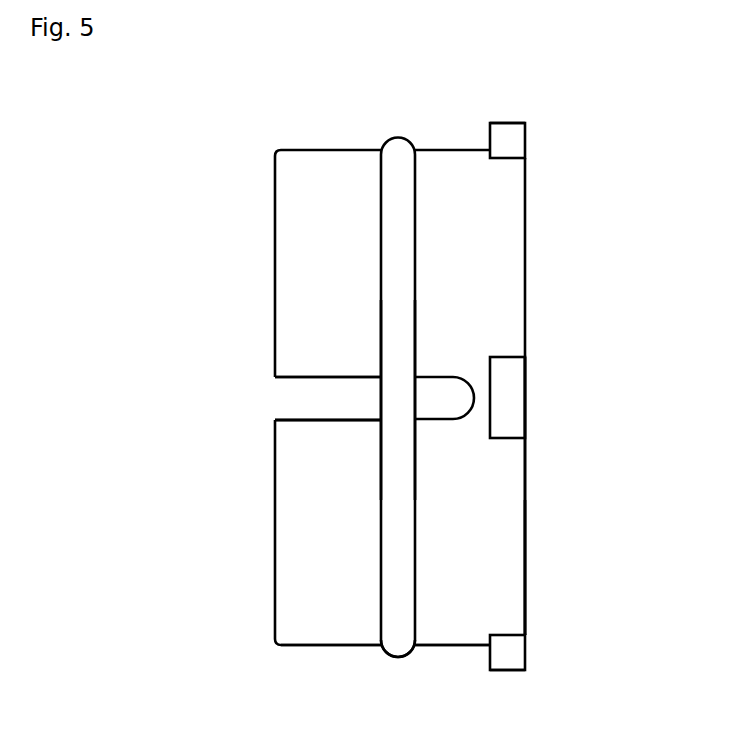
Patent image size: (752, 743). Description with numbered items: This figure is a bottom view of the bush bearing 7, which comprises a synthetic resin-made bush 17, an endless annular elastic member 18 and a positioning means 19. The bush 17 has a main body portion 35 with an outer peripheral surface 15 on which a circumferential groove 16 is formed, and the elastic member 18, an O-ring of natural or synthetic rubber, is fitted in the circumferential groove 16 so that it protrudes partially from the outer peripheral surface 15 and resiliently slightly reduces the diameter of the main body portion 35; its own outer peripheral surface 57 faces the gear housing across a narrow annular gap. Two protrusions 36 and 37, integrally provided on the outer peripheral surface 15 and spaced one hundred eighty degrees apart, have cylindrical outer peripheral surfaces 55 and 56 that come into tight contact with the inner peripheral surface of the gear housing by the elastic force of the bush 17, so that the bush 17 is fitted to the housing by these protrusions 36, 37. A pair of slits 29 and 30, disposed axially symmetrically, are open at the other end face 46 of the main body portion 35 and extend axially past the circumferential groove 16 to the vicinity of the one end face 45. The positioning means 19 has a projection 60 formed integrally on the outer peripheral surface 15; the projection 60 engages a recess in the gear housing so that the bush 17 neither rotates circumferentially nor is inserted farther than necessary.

The bush bearing 7 is at (550, 587).
The outer peripheral surface 15 is at (500, 237).
The circumferential groove 16 is at (407, 568).
The bush 17 is at (272, 549).
The endless annular elastic member 18 is at (393, 190).
The positioning means 19 is at (535, 400).
The slit 29 is at (288, 399).
The slit 30 is at (284, 433).
The main body portion 35 is at (300, 606).
The protrusion 36 is at (515, 143).
The protrusion 37 is at (515, 652).
The one end face 45 is at (527, 484).
The other end face 46 is at (275, 268).
The outer peripheral surface 55 is at (510, 123).
The outer peripheral surface 56 is at (510, 670).
The outer peripheral surface 57 is at (398, 476).
The projection 60 is at (511, 380).